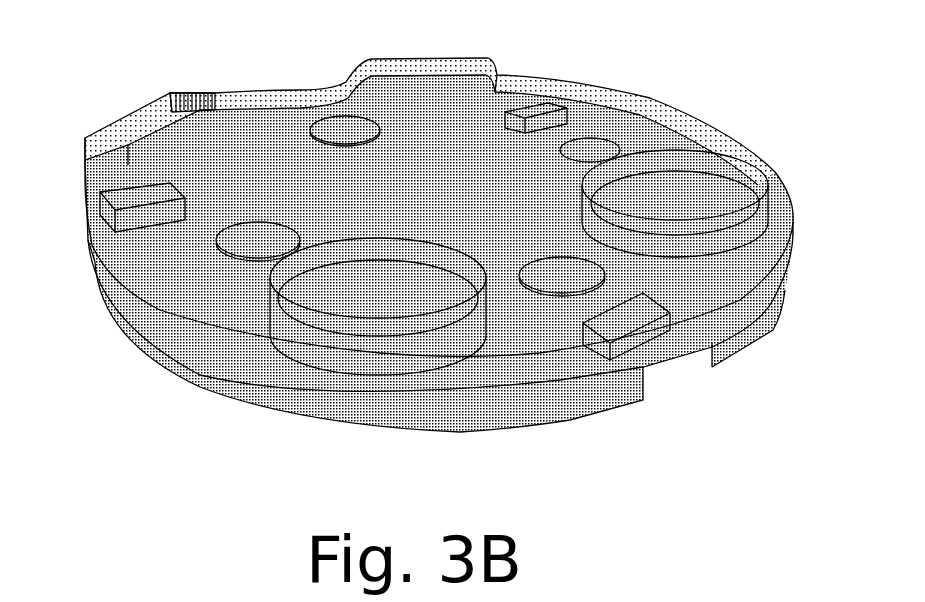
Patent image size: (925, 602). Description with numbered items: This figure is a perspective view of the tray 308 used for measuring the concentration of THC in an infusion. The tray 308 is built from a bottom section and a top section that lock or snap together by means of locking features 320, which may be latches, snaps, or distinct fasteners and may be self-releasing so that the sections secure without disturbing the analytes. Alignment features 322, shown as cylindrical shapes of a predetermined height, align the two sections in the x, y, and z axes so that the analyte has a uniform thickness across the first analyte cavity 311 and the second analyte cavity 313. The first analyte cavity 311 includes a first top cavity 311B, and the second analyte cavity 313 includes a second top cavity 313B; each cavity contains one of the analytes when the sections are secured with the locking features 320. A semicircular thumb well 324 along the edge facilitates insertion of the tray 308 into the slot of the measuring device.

The tray 308 is at (697, 81).
The semicircular thumb well 324 is at (335, 80).
The alignment features 322 is at (360, 143).
The locking features 320 is at (528, 127).
The first top cavity 311B is at (385, 285).
The first analyte cavity 311 is at (378, 298).
The second top cavity 313B is at (696, 192).
The second analyte cavity 313 is at (675, 203).